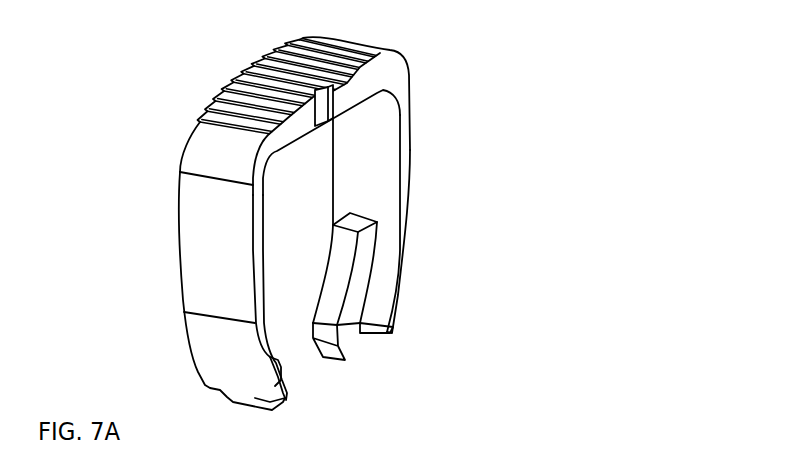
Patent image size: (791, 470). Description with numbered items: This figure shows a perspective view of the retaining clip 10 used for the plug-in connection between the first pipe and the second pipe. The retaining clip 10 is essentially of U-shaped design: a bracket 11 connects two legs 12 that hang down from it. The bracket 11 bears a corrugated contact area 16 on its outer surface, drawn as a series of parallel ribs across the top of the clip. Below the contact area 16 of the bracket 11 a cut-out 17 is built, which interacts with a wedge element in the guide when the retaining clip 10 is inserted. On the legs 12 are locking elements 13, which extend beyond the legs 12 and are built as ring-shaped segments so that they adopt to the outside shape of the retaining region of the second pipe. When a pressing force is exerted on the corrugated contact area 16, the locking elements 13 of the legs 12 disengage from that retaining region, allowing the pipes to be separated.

The retaining clip 10 is at (446, 48).
The bracket 11 is at (373, 76).
The legs 12 is at (207, 258).
The locking elements 13 is at (363, 277).
The corrugated contact area 16 is at (265, 80).
The cut-out 17 is at (322, 102).